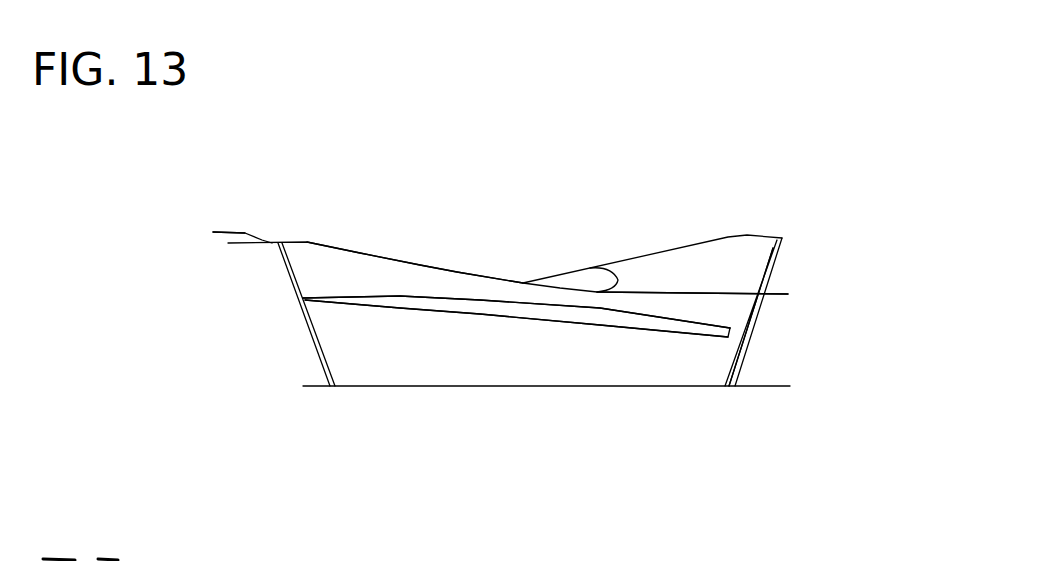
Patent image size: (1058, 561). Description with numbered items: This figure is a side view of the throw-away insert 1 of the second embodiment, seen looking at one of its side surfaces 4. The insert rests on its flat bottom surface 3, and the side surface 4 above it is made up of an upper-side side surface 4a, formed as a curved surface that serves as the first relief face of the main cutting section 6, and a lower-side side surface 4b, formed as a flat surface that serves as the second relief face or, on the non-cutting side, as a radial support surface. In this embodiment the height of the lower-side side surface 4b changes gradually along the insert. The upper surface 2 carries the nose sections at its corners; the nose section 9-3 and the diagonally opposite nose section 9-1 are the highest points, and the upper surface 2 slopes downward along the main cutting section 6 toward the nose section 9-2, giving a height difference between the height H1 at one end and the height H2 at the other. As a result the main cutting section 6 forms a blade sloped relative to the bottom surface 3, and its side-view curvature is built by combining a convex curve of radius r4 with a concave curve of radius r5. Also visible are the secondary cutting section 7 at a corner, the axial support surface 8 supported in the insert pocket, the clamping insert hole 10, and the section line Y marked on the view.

The throw-away insert 1 is at (643, 215).
The upper surface 2 is at (685, 268).
The bottom surface 3 is at (697, 388).
The side surface 4 is at (460, 460).
The upper-side side surface 4a is at (385, 280).
The lower-side side surface 4b is at (442, 365).
The main cutting section 6 is at (445, 272).
The secondary cutting section 7 is at (218, 233).
The axial support surface 8 is at (750, 318).
The nose section 9-1 is at (785, 232).
The nose section 9-2 is at (755, 290).
The nose section 9-3 is at (275, 222).
The insert hole 10 is at (580, 273).
The radius r4 is at (371, 256).
The radius r5 is at (588, 292).
The height H1 is at (230, 243).
The height H2 is at (778, 383).
The section line Y is at (677, 353).